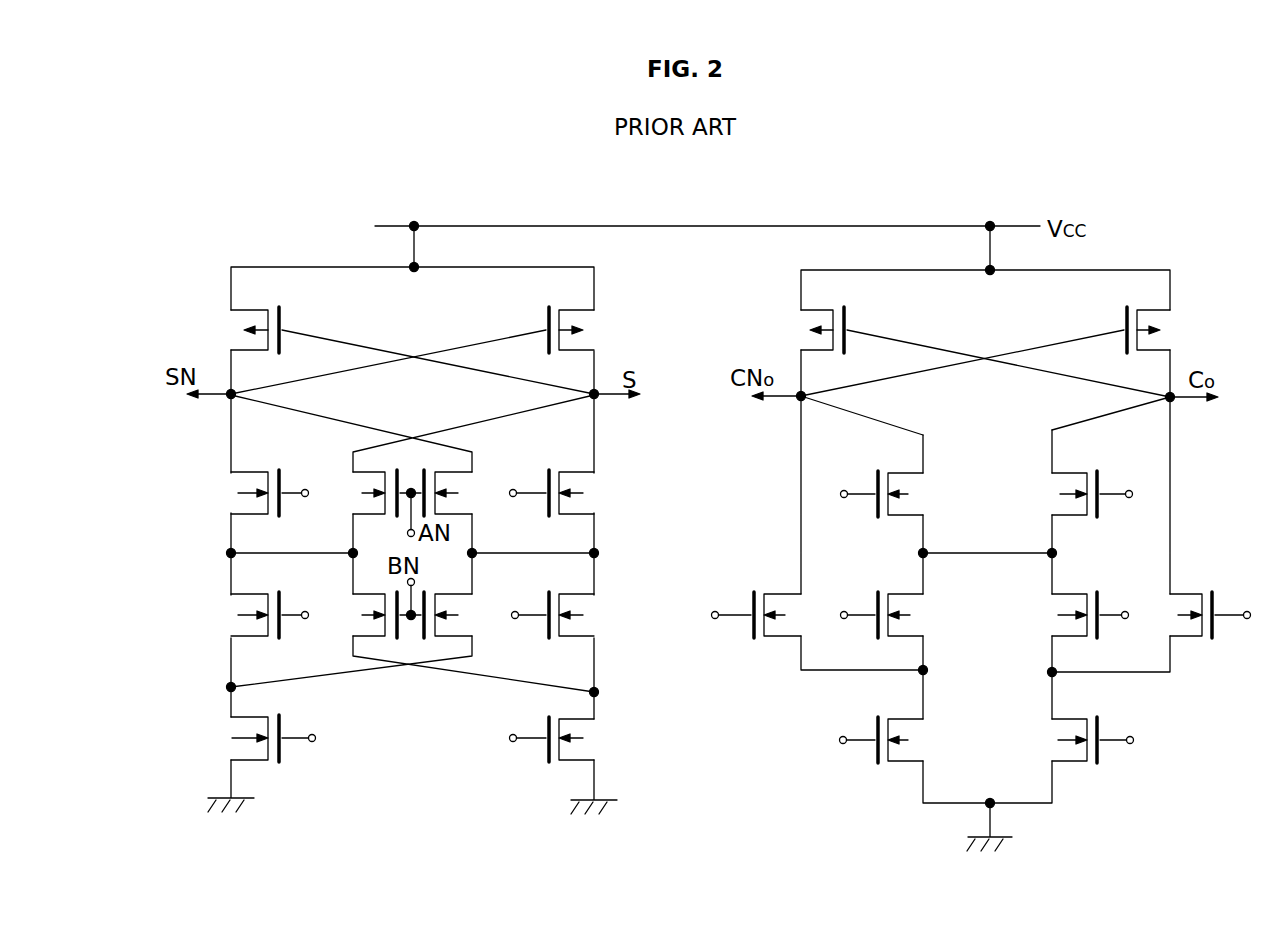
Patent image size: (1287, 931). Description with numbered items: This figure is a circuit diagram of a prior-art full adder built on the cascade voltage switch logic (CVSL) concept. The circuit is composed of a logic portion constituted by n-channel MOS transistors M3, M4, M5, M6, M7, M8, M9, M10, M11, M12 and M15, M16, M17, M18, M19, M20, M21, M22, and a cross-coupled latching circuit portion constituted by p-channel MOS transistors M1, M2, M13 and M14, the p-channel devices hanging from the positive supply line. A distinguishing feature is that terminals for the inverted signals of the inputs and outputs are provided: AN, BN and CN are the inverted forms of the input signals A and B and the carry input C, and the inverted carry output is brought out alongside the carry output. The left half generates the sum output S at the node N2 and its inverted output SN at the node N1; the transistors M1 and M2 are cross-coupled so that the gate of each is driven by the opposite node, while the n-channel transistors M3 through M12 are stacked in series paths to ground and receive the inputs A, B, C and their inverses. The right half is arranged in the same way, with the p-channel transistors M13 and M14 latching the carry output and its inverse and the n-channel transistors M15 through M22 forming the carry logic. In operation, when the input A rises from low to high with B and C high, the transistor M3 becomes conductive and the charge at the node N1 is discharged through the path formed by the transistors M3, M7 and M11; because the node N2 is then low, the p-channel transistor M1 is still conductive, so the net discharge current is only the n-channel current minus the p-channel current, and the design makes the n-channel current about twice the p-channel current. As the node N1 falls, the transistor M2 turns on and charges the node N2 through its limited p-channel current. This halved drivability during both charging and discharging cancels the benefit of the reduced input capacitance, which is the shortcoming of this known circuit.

The p-channel MOS transistor M1 is at (395, 350).
The p-channel MOS transistor M2 is at (428, 350).
The n-channel MOS transistor M3 is at (255, 488).
The n-channel MOS transistor M4 is at (360, 493).
The n-channel MOS transistor M5 is at (460, 493).
The n-channel MOS transistor M6 is at (565, 488).
The n-channel MOS transistor M7 is at (255, 610).
The n-channel MOS transistor M8 is at (360, 615).
The n-channel MOS transistor M9 is at (460, 615).
The n-channel MOS transistor M10 is at (572, 610).
The n-channel MOS transistor M11 is at (252, 734).
The n-channel MOS transistor M12 is at (565, 734).
The p-channel MOS transistor M13 is at (961, 352).
The p-channel MOS transistor M14 is at (1009, 351).
The n-channel MOS transistor M15 is at (904, 489).
The n-channel MOS transistor M16 is at (1076, 489).
The n-channel MOS transistor M17 is at (772, 610).
The n-channel MOS transistor M18 is at (899, 610).
The n-channel MOS transistor M19 is at (1068, 610).
The n-channel MOS transistor M20 is at (1200, 610).
The n-channel MOS transistor M21 is at (903, 735).
The n-channel MOS transistor M22 is at (1071, 735).
The node N1 is at (227, 398).
The node N2 is at (598, 399).